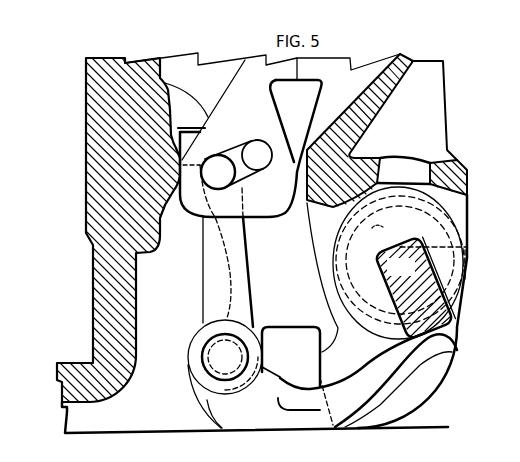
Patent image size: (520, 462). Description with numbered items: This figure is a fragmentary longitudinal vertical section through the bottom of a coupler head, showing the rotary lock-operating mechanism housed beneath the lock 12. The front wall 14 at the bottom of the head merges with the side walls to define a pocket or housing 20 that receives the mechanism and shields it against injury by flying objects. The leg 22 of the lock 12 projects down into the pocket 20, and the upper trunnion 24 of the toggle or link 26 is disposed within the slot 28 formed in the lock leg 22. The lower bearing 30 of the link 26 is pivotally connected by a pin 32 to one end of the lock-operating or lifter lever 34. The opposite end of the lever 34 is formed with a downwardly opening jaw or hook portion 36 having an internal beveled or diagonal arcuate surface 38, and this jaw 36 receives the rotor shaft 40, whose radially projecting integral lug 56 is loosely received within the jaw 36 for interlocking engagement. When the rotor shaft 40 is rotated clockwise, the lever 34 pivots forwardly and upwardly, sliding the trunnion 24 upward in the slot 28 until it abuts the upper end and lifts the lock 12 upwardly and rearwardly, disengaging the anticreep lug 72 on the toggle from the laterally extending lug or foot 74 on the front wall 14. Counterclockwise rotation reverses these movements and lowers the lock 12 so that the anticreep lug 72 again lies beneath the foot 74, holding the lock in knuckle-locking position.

The lock 12 is at (240, 72).
The front wall 14 is at (86, 219).
The pocket or housing 20 is at (138, 357).
The leg 22 is at (274, 206).
The upper trunnion 24 is at (228, 172).
The toggle or link 26 is at (213, 260).
The slot 28 is at (257, 139).
The lower bearing 30 is at (195, 380).
The pin 32 is at (224, 355).
The lock-operating or lifter lever 34 is at (290, 421).
The jaw or hook portion 36 is at (458, 263).
The beveled or diagonal arcuate surface 38 is at (405, 232).
The rotor shaft 40 is at (416, 287).
The lug 56 is at (460, 333).
The anticreep lug 72 is at (178, 156).
The lug or foot 74 is at (205, 110).